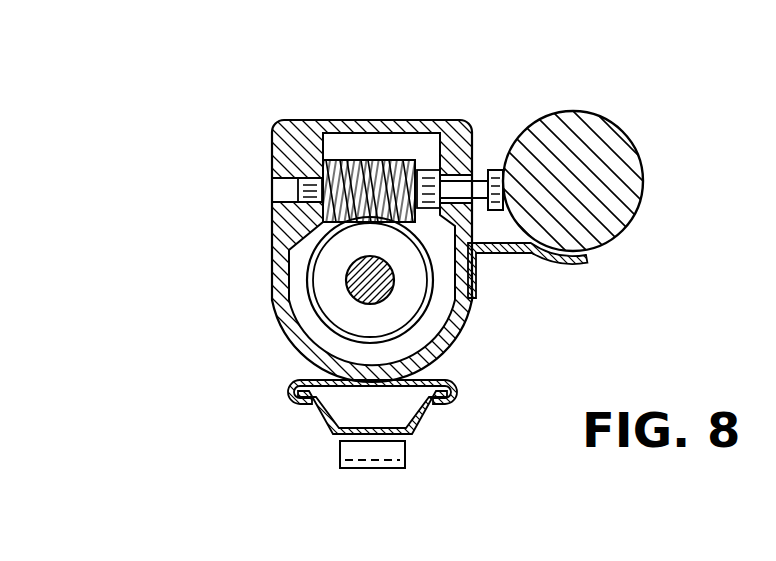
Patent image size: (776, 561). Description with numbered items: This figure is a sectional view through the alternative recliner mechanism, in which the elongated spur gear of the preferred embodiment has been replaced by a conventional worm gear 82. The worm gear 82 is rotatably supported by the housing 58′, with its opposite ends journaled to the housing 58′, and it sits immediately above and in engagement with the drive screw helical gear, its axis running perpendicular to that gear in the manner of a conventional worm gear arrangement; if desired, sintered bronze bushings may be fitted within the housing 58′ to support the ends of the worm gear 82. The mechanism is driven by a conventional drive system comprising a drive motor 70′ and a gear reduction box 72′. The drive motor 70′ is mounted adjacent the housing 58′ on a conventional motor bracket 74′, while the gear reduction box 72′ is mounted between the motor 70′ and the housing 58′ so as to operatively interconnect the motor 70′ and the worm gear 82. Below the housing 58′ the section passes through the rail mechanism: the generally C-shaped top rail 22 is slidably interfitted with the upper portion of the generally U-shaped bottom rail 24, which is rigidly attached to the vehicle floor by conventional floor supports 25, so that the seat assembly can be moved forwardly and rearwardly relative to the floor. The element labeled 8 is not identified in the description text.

The housing 58′ is at (272, 246).
The worm gear 82 is at (397, 160).
The gear reduction box 72′ is at (490, 170).
The drive motor 70′ is at (637, 146).
The motor bracket 74′ is at (567, 264).
The worm gear 8 is at (436, 336).
The top rail 22 is at (455, 383).
The bottom rail 24 is at (422, 420).
The floor supports 25 is at (340, 457).